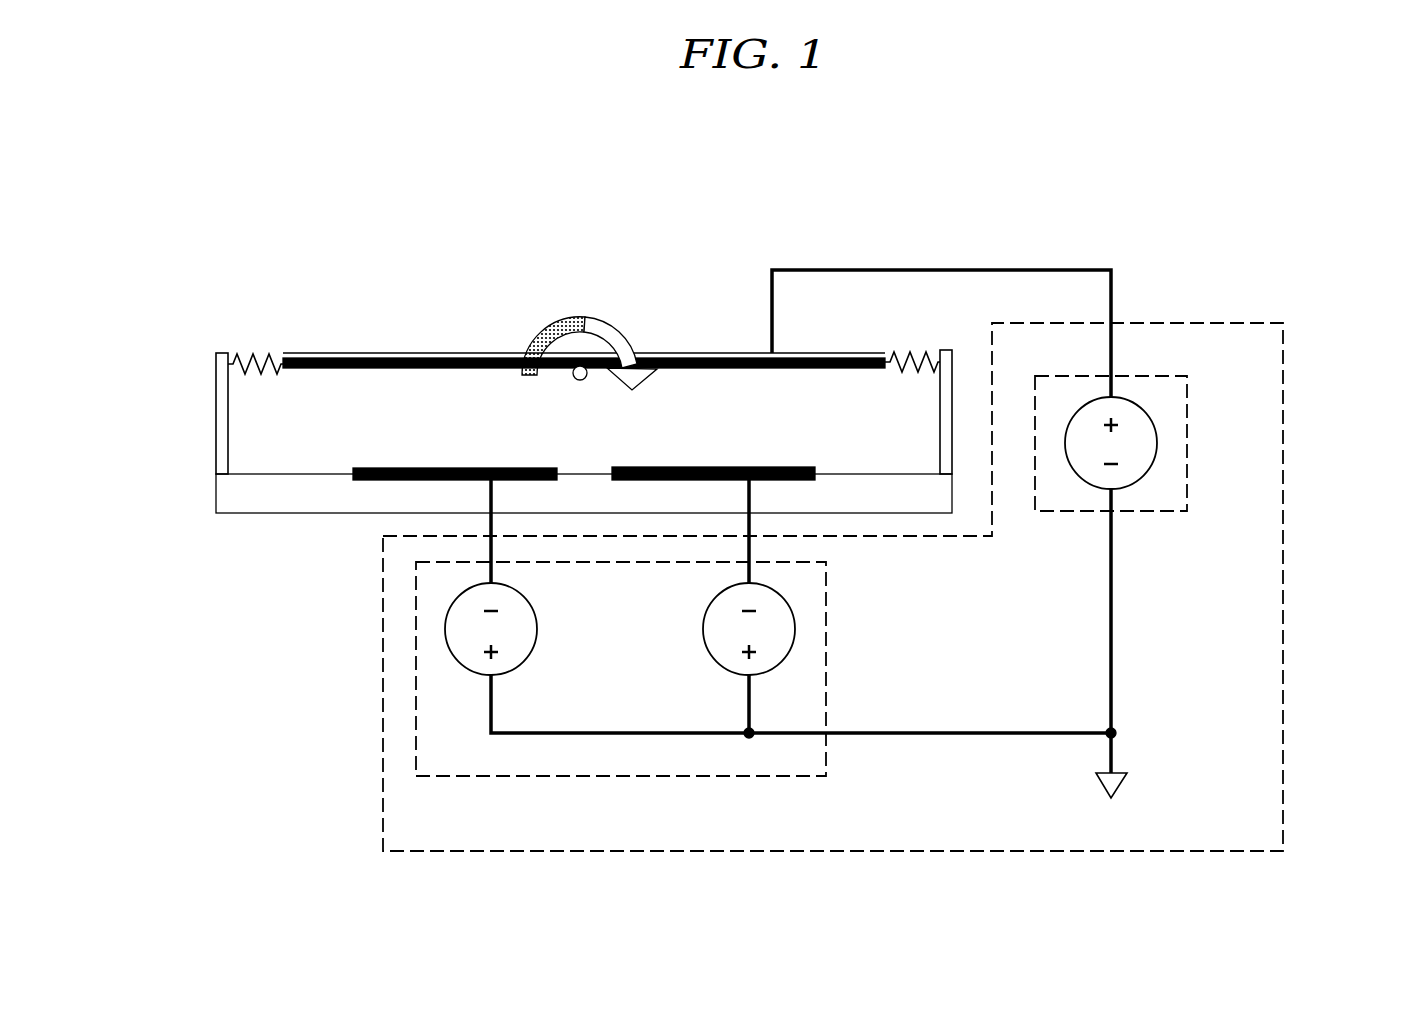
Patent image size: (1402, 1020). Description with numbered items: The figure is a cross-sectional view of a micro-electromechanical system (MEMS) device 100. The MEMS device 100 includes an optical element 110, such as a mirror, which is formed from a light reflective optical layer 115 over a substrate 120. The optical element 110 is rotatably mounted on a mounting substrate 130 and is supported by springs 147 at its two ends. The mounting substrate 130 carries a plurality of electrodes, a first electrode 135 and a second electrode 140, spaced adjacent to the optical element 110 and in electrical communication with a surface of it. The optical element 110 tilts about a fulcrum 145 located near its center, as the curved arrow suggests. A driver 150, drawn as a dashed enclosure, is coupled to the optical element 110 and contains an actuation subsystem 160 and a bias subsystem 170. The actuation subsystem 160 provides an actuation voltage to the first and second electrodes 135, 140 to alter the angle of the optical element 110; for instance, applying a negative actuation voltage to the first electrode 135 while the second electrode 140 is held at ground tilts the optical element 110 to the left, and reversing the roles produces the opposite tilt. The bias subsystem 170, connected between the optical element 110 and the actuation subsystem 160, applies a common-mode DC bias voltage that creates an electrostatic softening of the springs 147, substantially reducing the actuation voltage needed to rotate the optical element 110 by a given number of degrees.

The micro-electromechanical system (MEMS) device 100 is at (153, 156).
The optical element 110 is at (584, 327).
The light reflective optical layer 115 is at (283, 352).
The substrate 120 is at (820, 368).
The mounting substrate 130 is at (216, 496).
The first electrode 135 is at (353, 468).
The second electrode 140 is at (818, 468).
The fulcrum 145 is at (574, 379).
The springs 147 is at (252, 374).
The driver 150 is at (869, 560).
The actuation subsystem 160 is at (826, 638).
The bias subsystem 170 is at (1187, 432).